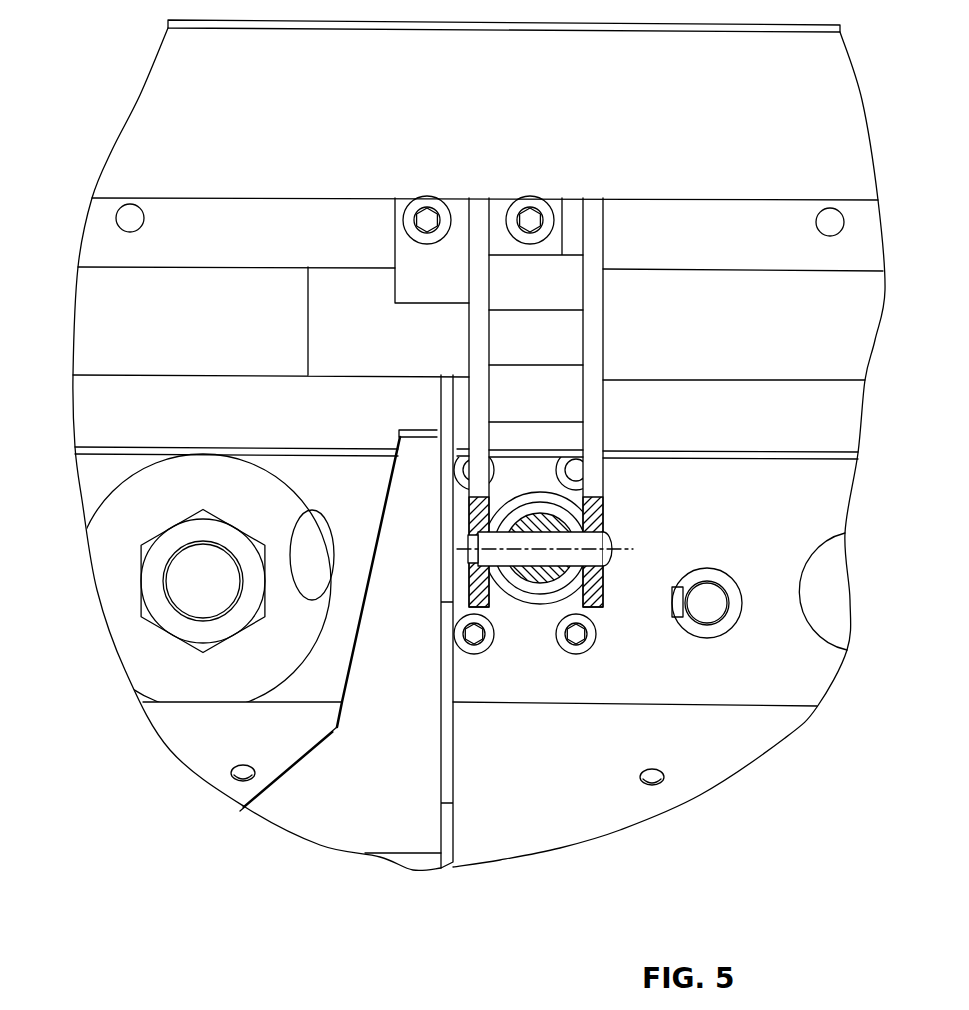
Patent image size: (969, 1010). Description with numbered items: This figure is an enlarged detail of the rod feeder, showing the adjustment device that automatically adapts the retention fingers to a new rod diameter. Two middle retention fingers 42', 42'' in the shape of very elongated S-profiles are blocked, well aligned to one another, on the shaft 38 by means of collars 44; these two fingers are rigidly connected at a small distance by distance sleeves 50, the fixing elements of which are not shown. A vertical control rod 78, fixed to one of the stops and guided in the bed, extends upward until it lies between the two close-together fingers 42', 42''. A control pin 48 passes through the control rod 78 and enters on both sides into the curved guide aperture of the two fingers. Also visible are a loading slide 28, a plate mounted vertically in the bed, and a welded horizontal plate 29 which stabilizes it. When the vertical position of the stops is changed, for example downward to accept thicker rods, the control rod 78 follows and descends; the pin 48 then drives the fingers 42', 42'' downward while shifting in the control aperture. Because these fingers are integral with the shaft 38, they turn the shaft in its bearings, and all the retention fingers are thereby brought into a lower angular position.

The shaft 38 is at (98, 230).
The collars 44 is at (410, 272).
The distance sleeves 50 is at (562, 388).
The retention finger 42'' is at (411, 410).
The retention finger 42' is at (642, 410).
The control rod 78 is at (535, 578).
The control pin 48 is at (613, 548).
The loading slide 28 is at (448, 745).
The horizontal plate 29 is at (350, 827).